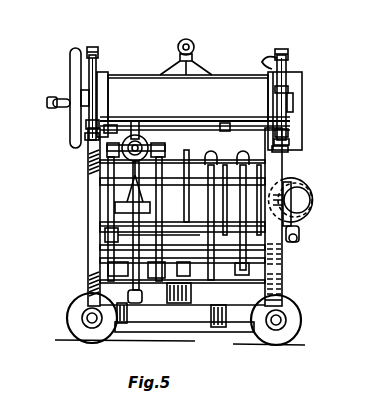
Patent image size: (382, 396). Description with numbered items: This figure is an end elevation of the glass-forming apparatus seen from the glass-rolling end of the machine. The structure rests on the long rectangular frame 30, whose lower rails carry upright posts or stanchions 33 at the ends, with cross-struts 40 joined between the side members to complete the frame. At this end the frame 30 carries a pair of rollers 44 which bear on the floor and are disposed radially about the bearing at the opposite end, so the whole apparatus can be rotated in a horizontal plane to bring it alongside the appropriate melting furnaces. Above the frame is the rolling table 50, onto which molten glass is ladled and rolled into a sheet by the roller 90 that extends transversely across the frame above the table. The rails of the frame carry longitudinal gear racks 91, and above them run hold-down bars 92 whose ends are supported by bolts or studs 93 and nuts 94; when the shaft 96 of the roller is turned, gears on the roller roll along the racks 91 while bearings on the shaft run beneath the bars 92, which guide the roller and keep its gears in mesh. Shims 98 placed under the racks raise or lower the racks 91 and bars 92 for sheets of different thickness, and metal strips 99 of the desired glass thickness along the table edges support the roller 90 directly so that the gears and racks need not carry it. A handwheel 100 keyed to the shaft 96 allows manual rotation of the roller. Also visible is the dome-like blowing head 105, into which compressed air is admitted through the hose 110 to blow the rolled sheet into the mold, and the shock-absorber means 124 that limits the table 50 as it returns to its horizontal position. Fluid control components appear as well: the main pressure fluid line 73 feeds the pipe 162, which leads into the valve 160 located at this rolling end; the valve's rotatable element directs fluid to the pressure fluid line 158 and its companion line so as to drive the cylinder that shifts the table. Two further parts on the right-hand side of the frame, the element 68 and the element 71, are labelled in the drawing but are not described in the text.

The frame 30 is at (285, 285).
The upright post 33 is at (90, 178).
The cross-strut 40 is at (190, 125).
The roller 44 is at (70, 320).
The table 50 is at (226, 124).
The motor 68 is at (310, 182).
The motor bracket 71 is at (287, 243).
The main pressure fluid line 73 is at (133, 304).
The roller 90 is at (145, 77).
The gear rack 91 is at (87, 128).
The bar 92 is at (99, 62).
The bolt 93 is at (95, 48).
The nut 94 is at (272, 64).
The shaft 96 is at (294, 103).
The shim 98 is at (112, 127).
The metal strip 99 is at (90, 140).
The handwheel 100 is at (72, 68).
The blowing head 105 is at (212, 72).
The hose 110 is at (181, 51).
The shock-absorber means 124 is at (169, 304).
The pressure fluid line 158 is at (110, 195).
The valve 160 is at (147, 132).
The pipe 162 is at (112, 274).